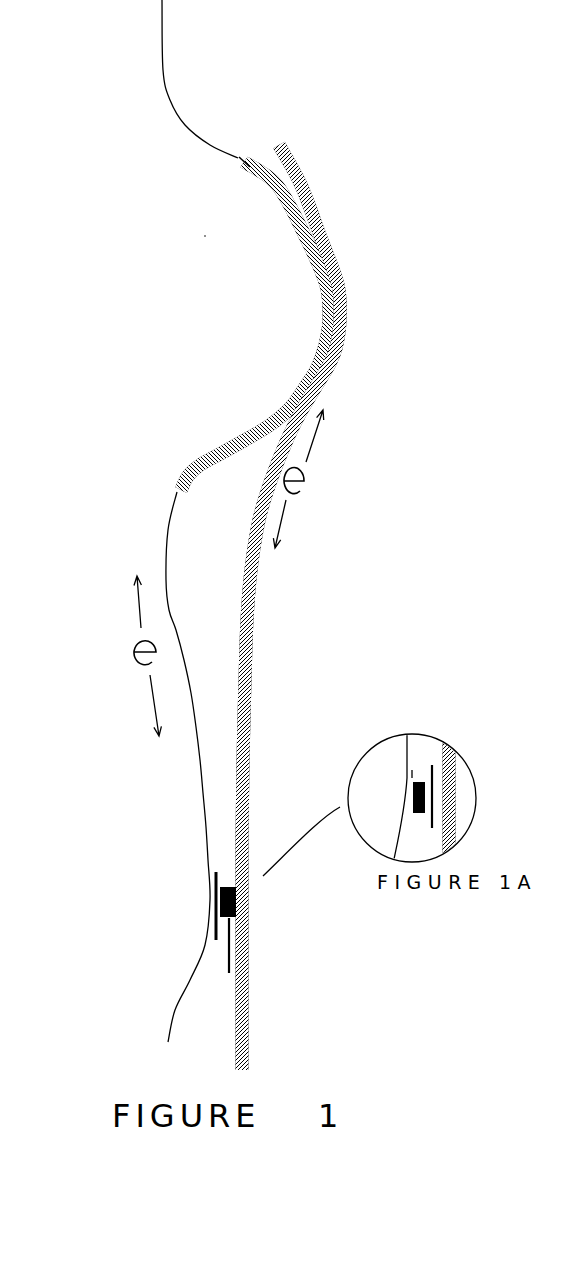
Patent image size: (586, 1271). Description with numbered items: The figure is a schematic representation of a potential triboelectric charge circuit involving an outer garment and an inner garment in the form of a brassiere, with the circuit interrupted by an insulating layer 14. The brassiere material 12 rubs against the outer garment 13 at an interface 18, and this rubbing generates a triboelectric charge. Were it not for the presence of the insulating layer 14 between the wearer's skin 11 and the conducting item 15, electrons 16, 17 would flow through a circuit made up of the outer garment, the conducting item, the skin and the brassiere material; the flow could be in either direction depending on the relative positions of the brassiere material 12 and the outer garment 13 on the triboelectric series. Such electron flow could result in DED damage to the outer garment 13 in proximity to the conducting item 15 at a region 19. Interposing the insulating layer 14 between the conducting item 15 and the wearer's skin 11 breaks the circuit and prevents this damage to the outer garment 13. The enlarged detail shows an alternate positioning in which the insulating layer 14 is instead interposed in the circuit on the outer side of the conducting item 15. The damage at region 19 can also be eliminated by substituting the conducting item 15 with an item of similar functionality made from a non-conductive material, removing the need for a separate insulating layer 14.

In FIG. 1, the wearer's skin 11 is at (160, 536).
In FIG. 1A, the wearer's skin 11 is at (400, 798).
In FIG. 1, the brassiere material 12 is at (345, 65).
In FIG. 1, the outer garment 13 is at (392, 257).
In FIG. 1, the insulating layer 14 is at (218, 938).
In FIG. 1A, the insulating layer 14 is at (432, 828).
In FIG. 1, the conducting item 15 is at (229, 975).
In FIG. 1A, the conducting item 15 is at (418, 773).
In FIG. 1, the electrons 16 is at (383, 479).
In FIG. 1, the electrons 17 is at (133, 660).
In FIG. 1, the interface 18 is at (368, 185).
In FIG. 1, the region 19 is at (290, 903).
In FIG. 1A, the region 19 is at (419, 797).